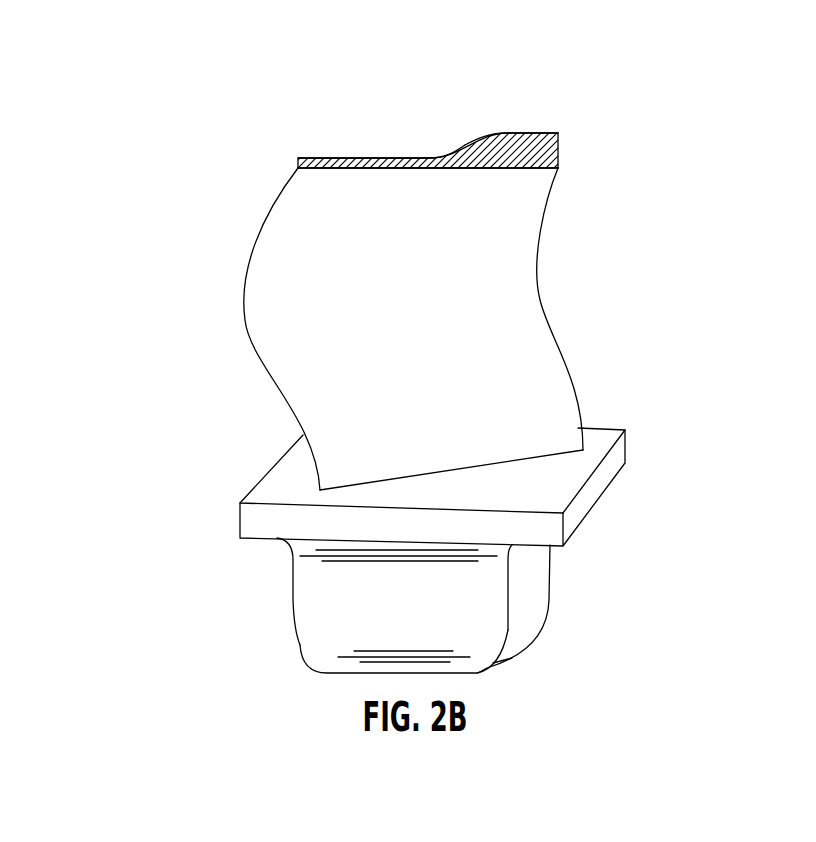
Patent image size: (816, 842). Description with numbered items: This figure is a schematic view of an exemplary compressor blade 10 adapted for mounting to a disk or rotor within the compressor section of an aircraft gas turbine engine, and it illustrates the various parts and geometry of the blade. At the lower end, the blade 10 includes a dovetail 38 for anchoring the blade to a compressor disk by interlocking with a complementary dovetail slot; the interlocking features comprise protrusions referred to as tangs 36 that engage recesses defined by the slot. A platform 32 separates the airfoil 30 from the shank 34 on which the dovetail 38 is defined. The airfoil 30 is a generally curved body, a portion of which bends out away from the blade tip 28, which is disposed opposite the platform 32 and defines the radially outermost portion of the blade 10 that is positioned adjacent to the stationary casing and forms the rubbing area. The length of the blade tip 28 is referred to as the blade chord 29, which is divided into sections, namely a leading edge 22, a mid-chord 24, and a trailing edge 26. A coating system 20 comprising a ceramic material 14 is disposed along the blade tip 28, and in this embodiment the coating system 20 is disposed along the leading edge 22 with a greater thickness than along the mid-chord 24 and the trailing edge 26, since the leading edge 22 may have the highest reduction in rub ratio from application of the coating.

The compressor blade 10 is at (133, 117).
The ceramic material 14 is at (560, 156).
The coating system 20 is at (594, 132).
The leading edge 22 is at (472, 122).
The mid-chord 24 is at (462, 142).
The trailing edge 26 is at (298, 142).
The blade tip 28 is at (267, 185).
The blade chord 29 is at (292, 73).
The airfoil 30 is at (520, 338).
The platform 32 is at (570, 477).
The shank 34 is at (338, 580).
The tangs 36 is at (333, 648).
The dovetail 38 is at (540, 600).